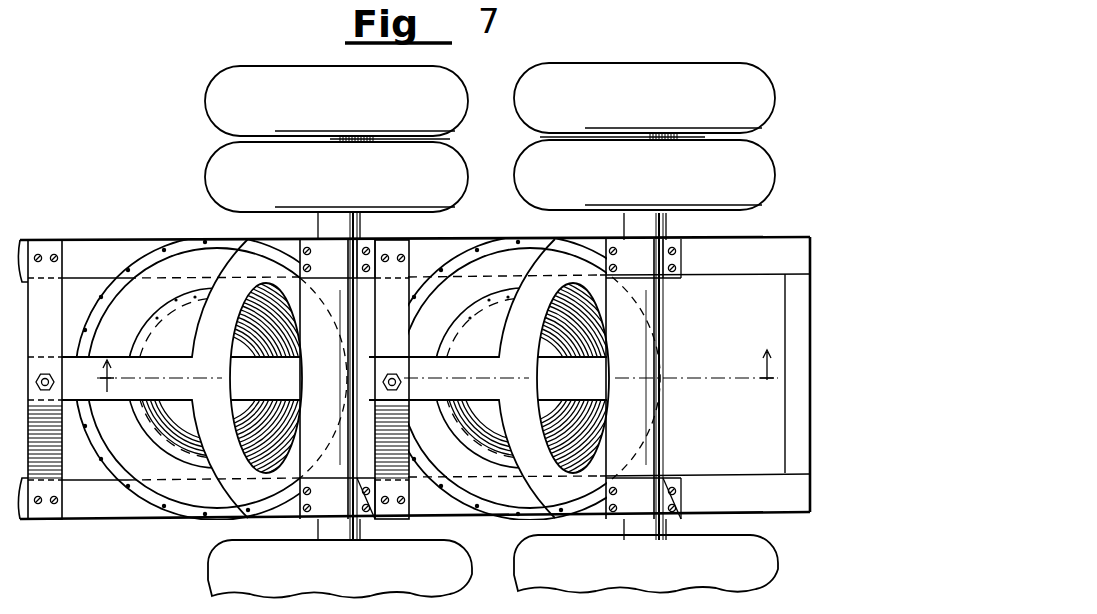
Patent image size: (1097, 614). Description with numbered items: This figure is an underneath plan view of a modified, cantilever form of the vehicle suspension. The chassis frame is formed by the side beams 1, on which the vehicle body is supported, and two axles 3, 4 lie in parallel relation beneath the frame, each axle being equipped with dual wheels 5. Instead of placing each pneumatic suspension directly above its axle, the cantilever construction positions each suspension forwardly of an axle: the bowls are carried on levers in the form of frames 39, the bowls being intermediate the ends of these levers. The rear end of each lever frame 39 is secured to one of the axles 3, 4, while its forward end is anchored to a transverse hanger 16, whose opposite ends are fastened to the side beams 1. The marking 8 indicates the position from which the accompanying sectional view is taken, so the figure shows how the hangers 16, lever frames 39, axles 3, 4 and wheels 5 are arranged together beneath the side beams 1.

The side beams 1 is at (84, 250).
The axle 3 is at (340, 211).
The axle 4 is at (634, 211).
The dual wheels 5 is at (522, 166).
The section line indicator 8 is at (437, 360).
The transverse hanger 16 is at (218, 379).
The frames 39 is at (335, 378).